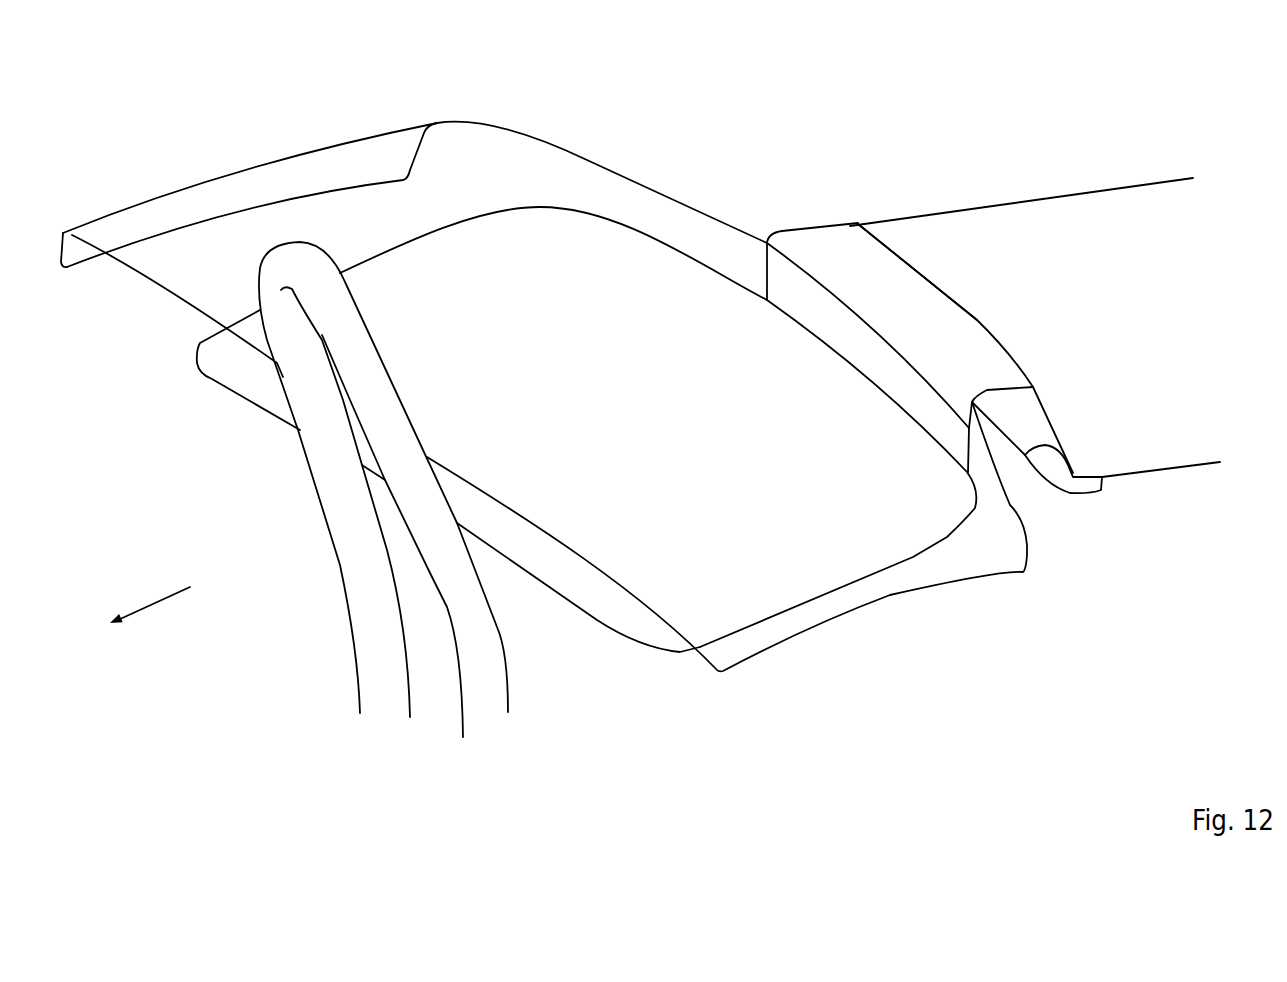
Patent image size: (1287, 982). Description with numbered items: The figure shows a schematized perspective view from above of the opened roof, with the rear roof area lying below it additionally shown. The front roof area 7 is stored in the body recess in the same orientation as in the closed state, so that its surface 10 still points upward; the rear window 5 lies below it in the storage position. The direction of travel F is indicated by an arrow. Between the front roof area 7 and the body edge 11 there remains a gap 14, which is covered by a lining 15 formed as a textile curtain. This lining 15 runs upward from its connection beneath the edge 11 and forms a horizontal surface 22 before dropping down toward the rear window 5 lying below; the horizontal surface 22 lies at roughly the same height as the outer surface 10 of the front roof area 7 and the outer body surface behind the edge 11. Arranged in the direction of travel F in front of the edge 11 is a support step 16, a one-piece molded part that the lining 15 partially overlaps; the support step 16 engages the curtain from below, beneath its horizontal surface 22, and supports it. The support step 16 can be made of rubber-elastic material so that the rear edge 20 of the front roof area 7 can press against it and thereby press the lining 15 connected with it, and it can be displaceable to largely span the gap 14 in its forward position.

The rear window 5 is at (631, 632).
The front roof area 7 is at (657, 421).
The surface 10 is at (590, 168).
The edge 11 is at (1022, 359).
The gap 14 is at (803, 190).
The lining 15 is at (863, 252).
The support step 16 is at (1022, 431).
The rear edge 20 is at (860, 328).
The horizontal surface 22 is at (915, 294).
The direction of travel F is at (146, 604).